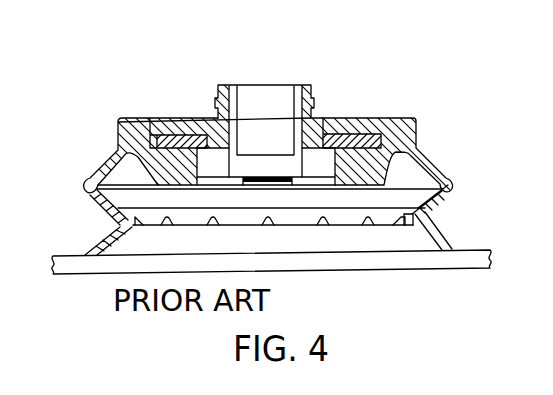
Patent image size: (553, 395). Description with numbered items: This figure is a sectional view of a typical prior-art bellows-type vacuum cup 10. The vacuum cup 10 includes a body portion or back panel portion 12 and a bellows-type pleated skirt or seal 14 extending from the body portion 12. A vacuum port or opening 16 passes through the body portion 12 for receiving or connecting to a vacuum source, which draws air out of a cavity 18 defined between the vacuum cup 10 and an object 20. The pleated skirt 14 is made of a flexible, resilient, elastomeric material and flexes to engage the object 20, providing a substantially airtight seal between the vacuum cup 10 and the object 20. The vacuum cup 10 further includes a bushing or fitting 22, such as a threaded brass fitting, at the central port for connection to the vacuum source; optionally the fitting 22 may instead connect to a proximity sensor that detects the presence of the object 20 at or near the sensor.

The bellows-type vacuum cup 10 is at (150, 76).
The body portion 12 is at (402, 102).
The bellows-type pleated skirt 14 is at (464, 214).
The vacuum port 16 is at (269, 98).
The cavity 18 is at (352, 243).
The object 20 is at (475, 268).
The bushing or fitting 22 is at (238, 104).